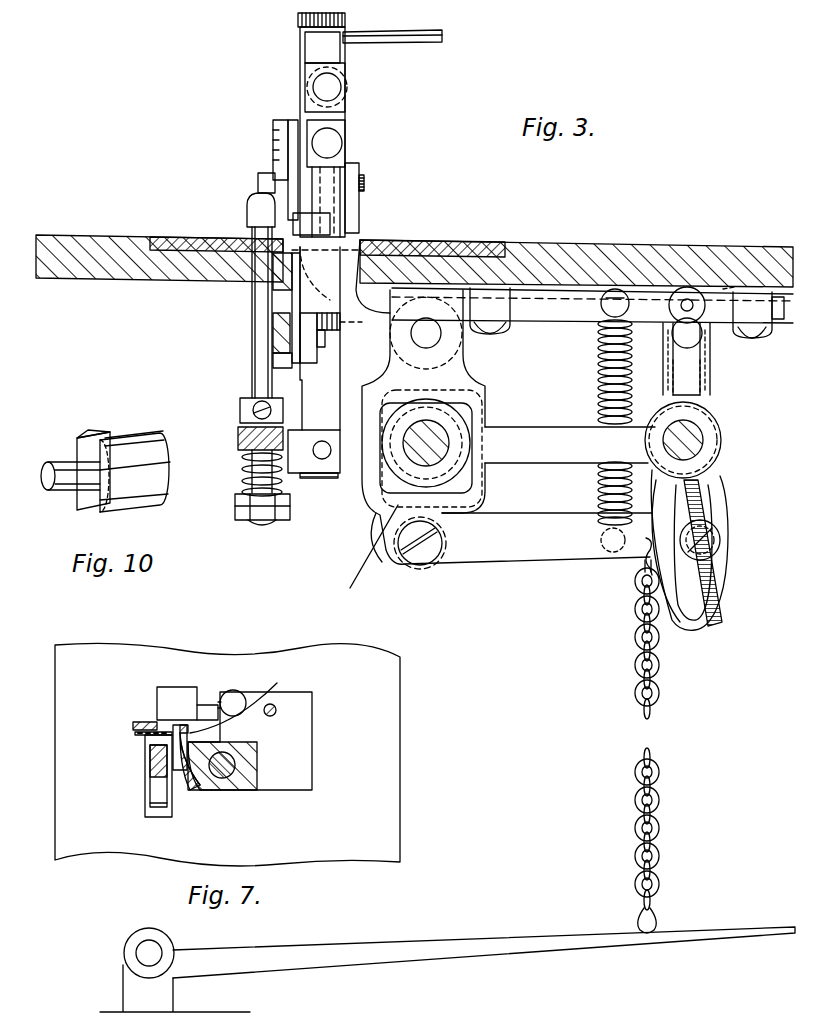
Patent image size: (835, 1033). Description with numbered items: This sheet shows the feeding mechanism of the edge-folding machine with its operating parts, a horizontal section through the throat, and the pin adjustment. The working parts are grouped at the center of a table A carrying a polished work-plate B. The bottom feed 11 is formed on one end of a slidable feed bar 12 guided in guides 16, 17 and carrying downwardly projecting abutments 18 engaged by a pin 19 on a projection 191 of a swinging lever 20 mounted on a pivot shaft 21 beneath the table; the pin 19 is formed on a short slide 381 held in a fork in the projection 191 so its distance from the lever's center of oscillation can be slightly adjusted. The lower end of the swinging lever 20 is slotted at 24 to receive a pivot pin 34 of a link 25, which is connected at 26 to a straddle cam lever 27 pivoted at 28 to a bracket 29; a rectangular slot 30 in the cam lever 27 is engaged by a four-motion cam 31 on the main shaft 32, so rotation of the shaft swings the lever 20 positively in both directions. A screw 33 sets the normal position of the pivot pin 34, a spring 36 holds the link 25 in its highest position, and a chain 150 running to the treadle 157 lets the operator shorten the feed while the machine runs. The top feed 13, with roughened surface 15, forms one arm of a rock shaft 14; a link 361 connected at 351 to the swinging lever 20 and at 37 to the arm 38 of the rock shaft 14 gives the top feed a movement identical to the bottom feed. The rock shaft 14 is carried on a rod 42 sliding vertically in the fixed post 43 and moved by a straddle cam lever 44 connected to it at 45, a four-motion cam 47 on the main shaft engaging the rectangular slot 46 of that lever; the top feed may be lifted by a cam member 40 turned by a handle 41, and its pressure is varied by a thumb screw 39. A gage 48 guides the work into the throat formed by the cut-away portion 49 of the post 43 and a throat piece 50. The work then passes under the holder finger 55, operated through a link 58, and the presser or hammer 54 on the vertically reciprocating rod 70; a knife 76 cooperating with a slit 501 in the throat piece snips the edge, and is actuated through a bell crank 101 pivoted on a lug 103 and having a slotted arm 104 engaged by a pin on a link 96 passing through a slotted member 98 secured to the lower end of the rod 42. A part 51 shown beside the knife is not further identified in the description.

In FIG. 3, the table A is at (78, 235).
In FIG. 3, the work-plate B is at (172, 237).
In FIG. 3, the bottom feed 11 is at (372, 238).
In FIG. 7, the bottom feed 11 is at (153, 803).
In FIG. 3, the feed bar 12 is at (590, 288).
In FIG. 3, the top feed 13 is at (345, 138).
In FIG. 7, the top feed 13 is at (147, 768).
In FIG. 3, the rock shaft 14 is at (352, 80).
In FIG. 3, the roughened surface 15 is at (338, 213).
In FIG. 3, the guide 16 is at (496, 320).
In FIG. 3, the guide 17 is at (752, 320).
In FIG. 3, the abutments 18 is at (710, 348).
In FIG. 3, the pin 19 is at (700, 358).
In FIG. 10, the pin 19 is at (66, 455).
In FIG. 3, the swinging lever 20 is at (720, 428).
In FIG. 3, the pivot shaft 21 is at (700, 444).
In FIG. 3, the slot 24 is at (696, 624).
In FIG. 3, the link 25 is at (545, 560).
In FIG. 3, the connection 26 is at (422, 565).
In FIG. 3, the cam lever 27 is at (378, 522).
In FIG. 3, the pivot 28 is at (430, 330).
In FIG. 3, the bracket 29 is at (390, 322).
In FIG. 3, the rectangular slot 30 is at (445, 378).
In FIG. 3, the four-motion cam 31 is at (408, 450).
In FIG. 3, the main shaft 32 is at (412, 452).
In FIG. 3, the screw 33 is at (724, 626).
In FIG. 3, the pivot pin 34 is at (712, 534).
In FIG. 3, the spring 36 is at (610, 525).
In FIG. 3, the connection 37 is at (292, 300).
In FIG. 3, the arm 38 is at (330, 220).
In FIG. 3, the thumb screw 39 is at (298, 14).
In FIG. 3, the cam member 40 is at (316, 48).
In FIG. 3, the handle 41 is at (432, 31).
In FIG. 3, the slide rod 42 is at (238, 428).
In FIG. 7, the slide rod 42 is at (235, 760).
In FIG. 3, the post 43 is at (359, 188).
In FIG. 7, the post 43 is at (262, 784).
In FIG. 3, the straddle cam lever 44 is at (552, 440).
In FIG. 3, the connection 45 is at (322, 459).
In FIG. 3, the rectangular slot 46 is at (468, 462).
In FIG. 3, the four-motion cam 47 is at (470, 440).
In FIG. 3, the gage 48 is at (364, 172).
In FIG. 7, the cut away portion 49 is at (204, 784).
In FIG. 7, the throat piece 50 is at (183, 772).
In FIG. 3, the guide bar 51 is at (291, 120).
In FIG. 3, the presser or hammer 54 is at (258, 210).
In FIG. 7, the presser or hammer 54 is at (178, 700).
In FIG. 3, the holder finger 55 is at (262, 176).
In FIG. 7, the holder finger 55 is at (133, 726).
In FIG. 7, the link 58 is at (278, 708).
In FIG. 3, the presser rod 70 is at (250, 393).
In FIG. 7, the presser rod 70 is at (237, 690).
In FIG. 3, the knife or snipper 76 is at (276, 130).
In FIG. 7, the knife or snipper 76 is at (140, 733).
In FIG. 3, the link 96 is at (274, 333).
In FIG. 3, the slotted member 98 is at (242, 462).
In FIG. 3, the bell crank 101 is at (275, 290).
In FIG. 3, the lug 103 is at (300, 325).
In FIG. 3, the arm 104 is at (273, 360).
In FIG. 3, the chain 150 is at (635, 796).
In FIG. 3, the treadle 157 is at (733, 930).
In FIG. 3, the projection 191 is at (708, 386).
In FIG. 10, the projection 191 is at (128, 455).
In FIG. 3, the connection 351 is at (687, 290).
In FIG. 3, the link 361 is at (612, 288).
In FIG. 3, the slide 381 is at (732, 287).
In FIG. 10, the slide 381 is at (82, 440).
In FIG. 7, the slit 501 is at (242, 696).